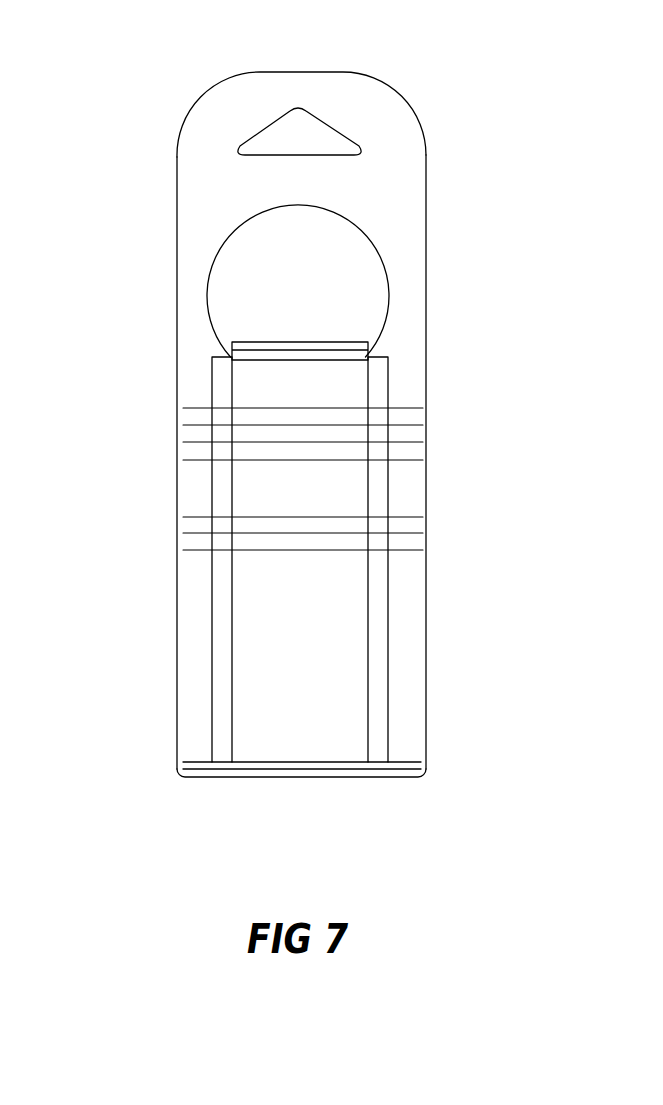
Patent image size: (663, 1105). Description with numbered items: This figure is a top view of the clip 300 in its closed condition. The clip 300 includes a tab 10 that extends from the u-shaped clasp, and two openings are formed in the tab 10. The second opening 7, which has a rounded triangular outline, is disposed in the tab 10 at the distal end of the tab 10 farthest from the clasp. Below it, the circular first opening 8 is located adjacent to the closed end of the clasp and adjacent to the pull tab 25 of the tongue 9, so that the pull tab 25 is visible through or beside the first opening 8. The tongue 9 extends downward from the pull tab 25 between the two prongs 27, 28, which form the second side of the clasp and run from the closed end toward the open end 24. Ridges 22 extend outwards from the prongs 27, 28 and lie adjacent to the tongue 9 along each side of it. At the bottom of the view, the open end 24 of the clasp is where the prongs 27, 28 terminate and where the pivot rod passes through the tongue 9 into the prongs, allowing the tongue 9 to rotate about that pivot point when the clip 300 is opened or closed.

The clip 300 is at (195, 83).
The second opening 7 is at (300, 130).
The tab 10 is at (383, 190).
The first opening 8 is at (342, 257).
The pull tab 25 is at (310, 341).
The tongue 9 is at (312, 492).
The ridges 22 is at (225, 596).
The prong 28 is at (405, 670).
The prong 27 is at (198, 695).
The open end 24 is at (402, 763).